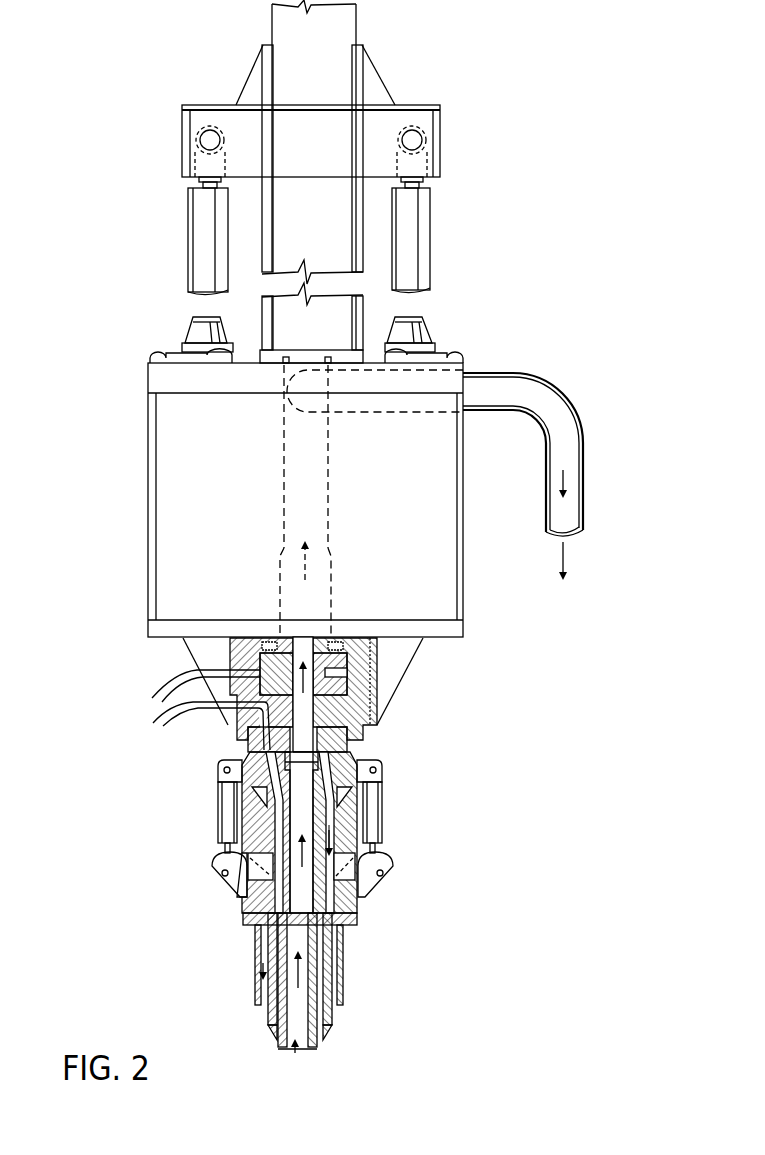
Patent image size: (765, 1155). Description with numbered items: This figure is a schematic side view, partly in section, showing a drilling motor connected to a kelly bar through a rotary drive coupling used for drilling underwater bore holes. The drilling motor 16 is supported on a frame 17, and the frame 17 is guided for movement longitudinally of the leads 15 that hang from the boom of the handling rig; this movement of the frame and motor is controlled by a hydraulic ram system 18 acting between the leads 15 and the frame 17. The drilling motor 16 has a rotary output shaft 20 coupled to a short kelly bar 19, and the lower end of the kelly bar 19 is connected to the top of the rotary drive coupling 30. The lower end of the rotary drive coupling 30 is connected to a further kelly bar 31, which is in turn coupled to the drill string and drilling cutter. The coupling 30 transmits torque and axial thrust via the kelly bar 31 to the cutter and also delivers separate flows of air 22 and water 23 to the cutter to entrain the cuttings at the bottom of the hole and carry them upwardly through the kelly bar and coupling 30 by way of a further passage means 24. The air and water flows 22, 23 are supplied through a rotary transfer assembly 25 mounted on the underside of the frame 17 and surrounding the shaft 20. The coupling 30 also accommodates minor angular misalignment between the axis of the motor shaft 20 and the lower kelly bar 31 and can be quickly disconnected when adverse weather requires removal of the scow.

The leads 15 is at (346, 28).
The drilling motor 16 is at (168, 352).
The frame 17 is at (148, 430).
The hydraulic ram system 18 is at (418, 242).
The kelly bar 19 is at (343, 742).
The rotary output shaft 20 is at (323, 637).
The air flow 22 is at (165, 679).
The water flow 23 is at (157, 722).
The passage means 24 is at (297, 638).
The rotary transfer assembly 25 is at (386, 677).
The rotary drive coupling 30 is at (380, 808).
The kelly bar 31 is at (343, 967).